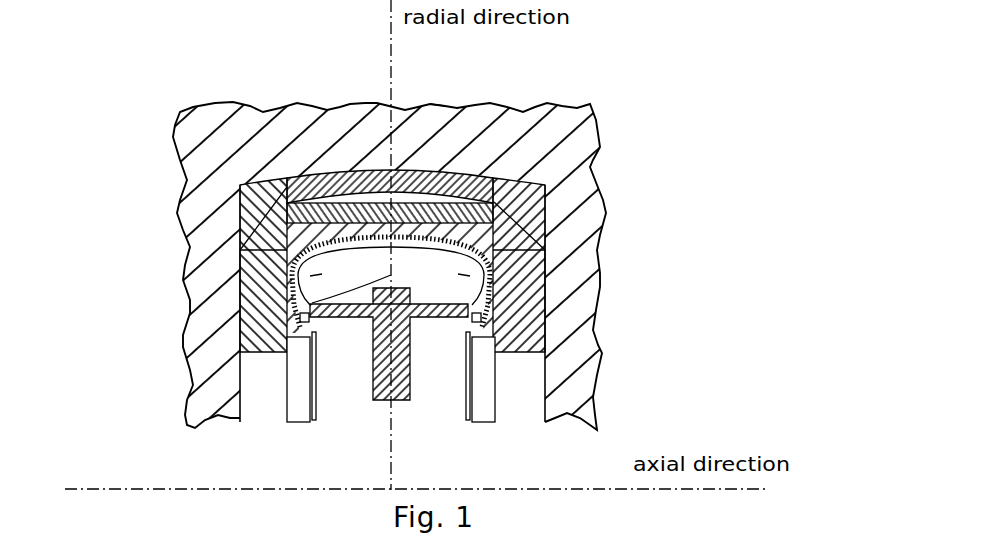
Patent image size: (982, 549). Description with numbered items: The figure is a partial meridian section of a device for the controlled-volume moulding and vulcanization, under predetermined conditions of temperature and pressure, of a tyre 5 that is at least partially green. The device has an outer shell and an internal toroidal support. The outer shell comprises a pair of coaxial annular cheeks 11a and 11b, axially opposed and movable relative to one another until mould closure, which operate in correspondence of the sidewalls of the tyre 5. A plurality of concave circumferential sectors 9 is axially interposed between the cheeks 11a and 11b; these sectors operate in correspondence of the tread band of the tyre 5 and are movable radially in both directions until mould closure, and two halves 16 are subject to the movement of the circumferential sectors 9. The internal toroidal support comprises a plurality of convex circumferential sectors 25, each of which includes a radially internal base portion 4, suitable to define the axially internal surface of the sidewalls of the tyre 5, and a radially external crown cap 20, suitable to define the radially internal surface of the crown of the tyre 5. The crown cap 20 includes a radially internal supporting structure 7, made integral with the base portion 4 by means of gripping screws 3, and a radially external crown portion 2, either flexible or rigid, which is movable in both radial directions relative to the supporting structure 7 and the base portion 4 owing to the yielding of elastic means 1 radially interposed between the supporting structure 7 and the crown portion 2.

The elastic means 1 is at (593, 268).
The crown portion 2 is at (183, 112).
The gripping screws 3 is at (206, 214).
The base portion 4 is at (430, 318).
The tyre 5 is at (353, 200).
The supporting structure 7 is at (418, 240).
The concave circumferential sectors 9 is at (437, 100).
The annular cheek 11a is at (593, 340).
The annular cheek 11b is at (188, 335).
The halves 16 is at (240, 187).
The crown cap 20 is at (300, 322).
The convex circumferential sectors 25 is at (347, 420).